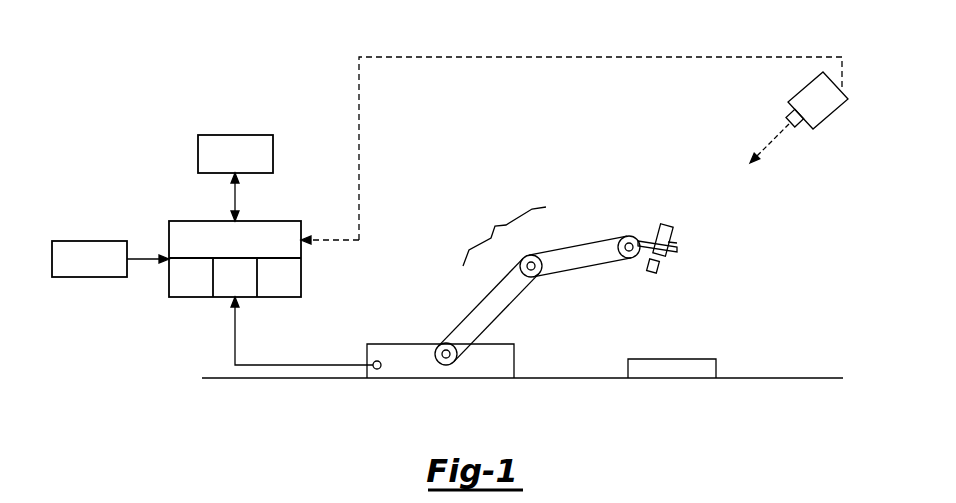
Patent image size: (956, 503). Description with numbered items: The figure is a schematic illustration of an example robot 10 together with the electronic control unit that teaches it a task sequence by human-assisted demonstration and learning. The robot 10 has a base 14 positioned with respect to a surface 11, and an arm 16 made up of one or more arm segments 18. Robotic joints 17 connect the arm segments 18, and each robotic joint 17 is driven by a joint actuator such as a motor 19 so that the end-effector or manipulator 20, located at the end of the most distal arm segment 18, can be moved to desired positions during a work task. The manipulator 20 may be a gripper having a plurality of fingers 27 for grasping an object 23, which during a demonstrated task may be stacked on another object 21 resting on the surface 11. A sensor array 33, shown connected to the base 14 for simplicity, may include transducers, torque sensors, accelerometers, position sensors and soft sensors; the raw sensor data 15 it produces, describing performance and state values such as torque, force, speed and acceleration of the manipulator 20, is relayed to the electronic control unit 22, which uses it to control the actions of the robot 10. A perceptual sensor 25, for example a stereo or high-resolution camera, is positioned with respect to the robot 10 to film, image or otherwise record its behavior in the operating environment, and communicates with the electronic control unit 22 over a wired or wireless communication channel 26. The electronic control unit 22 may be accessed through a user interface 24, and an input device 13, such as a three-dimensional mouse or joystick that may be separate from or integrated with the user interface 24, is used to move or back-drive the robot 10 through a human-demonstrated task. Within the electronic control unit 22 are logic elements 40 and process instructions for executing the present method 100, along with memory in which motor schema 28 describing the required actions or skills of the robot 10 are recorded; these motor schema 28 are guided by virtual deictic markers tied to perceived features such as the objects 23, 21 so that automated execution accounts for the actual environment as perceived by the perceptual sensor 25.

The robot 10 is at (454, 163).
The surface 11 is at (782, 372).
The input device 13 is at (80, 269).
The base 14 is at (399, 369).
The raw sensor data 15 is at (235, 338).
The arm 16 is at (504, 236).
The robotic joint 17 is at (438, 346).
The arm segment 18 is at (482, 298).
The motor 19 is at (451, 358).
The manipulator 20 is at (719, 217).
The object 21 is at (673, 366).
The electronic control unit 22 is at (226, 251).
The object 23 is at (668, 223).
The user interface 24 is at (226, 167).
The perceptual sensor 25 is at (829, 115).
The communication channel 26 is at (604, 57).
The fingers 27 is at (678, 258).
The motor schema 28 is at (182, 292).
The sensor array 33 is at (378, 370).
The logic elements 40 is at (226, 292).
The method 100 is at (268, 292).